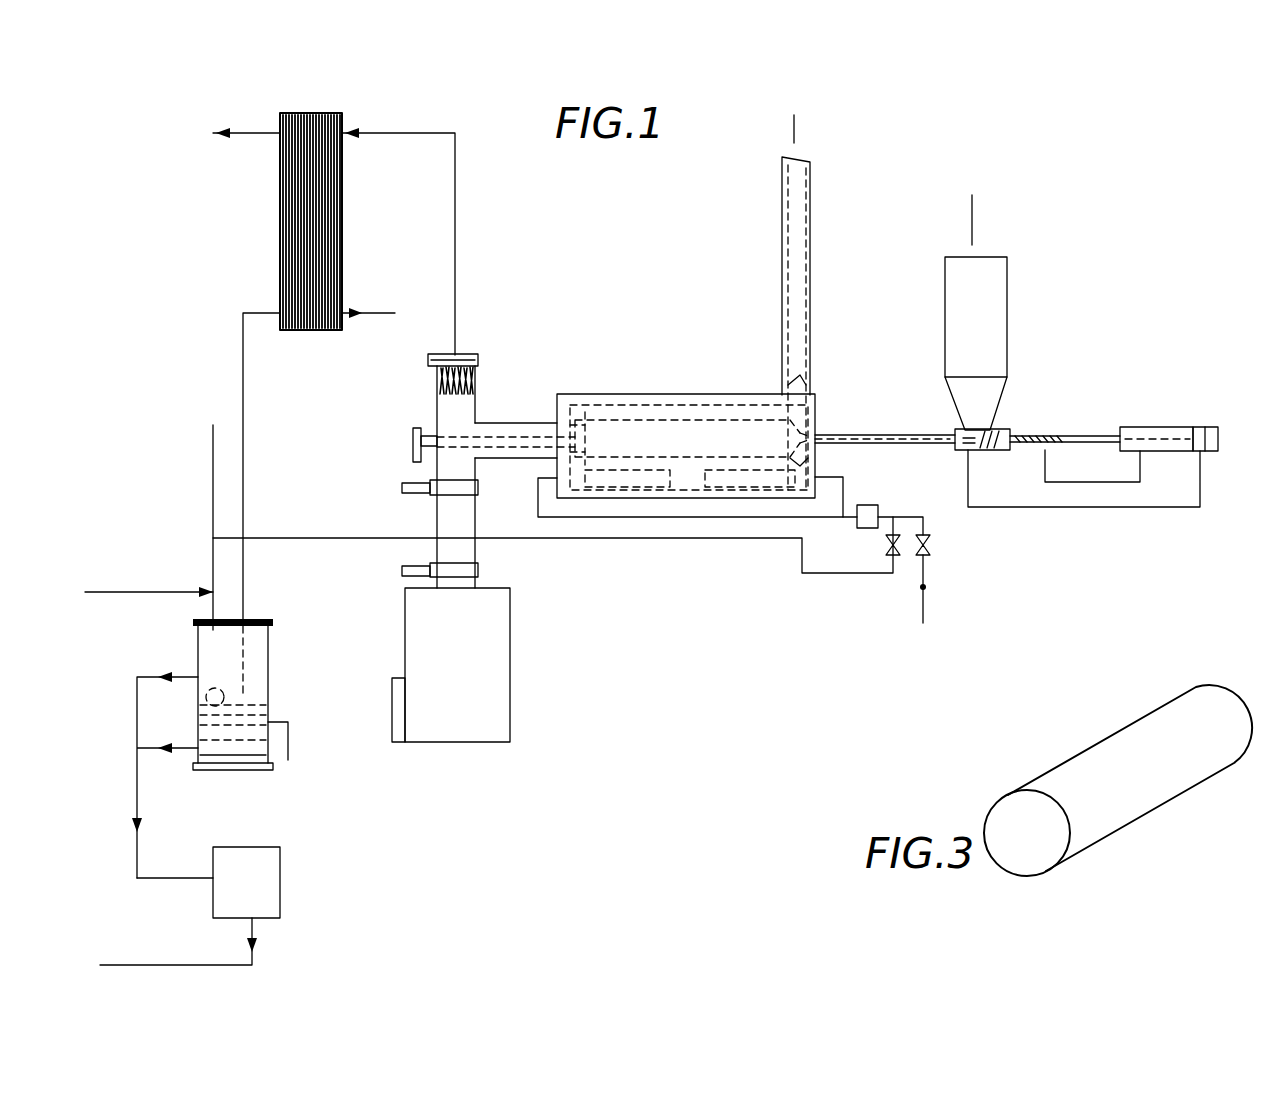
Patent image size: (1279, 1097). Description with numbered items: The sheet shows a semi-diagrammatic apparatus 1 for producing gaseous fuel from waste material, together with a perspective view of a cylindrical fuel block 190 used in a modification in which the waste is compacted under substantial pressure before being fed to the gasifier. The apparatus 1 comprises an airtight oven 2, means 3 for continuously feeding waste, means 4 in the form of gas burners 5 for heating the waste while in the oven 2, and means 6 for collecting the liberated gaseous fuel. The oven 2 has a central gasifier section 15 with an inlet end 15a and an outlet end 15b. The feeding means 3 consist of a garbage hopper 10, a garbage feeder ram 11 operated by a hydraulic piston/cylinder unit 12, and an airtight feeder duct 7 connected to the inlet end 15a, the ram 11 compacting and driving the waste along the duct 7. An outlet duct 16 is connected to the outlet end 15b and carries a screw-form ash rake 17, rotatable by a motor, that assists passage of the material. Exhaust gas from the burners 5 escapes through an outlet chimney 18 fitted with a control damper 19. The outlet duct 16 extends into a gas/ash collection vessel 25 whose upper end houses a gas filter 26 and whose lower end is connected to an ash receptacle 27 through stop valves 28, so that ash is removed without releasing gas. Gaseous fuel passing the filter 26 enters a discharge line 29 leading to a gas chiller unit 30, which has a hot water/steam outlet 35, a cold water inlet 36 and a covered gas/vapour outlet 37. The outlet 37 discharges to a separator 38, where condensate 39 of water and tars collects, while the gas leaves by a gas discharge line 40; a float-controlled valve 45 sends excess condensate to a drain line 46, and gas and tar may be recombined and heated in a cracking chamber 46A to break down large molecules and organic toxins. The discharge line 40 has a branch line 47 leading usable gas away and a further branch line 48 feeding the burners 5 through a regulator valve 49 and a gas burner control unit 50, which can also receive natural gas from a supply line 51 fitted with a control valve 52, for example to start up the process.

In FIG. 1, the apparatus 1 is at (1042, 288).
In FIG. 1, the oven 2 is at (688, 385).
In FIG. 1, the means for continuously feeding gas-producing waste material 3 is at (922, 435).
In FIG. 1, the means for heating the waste material 4 is at (615, 522).
In FIG. 1, the gas burners 5 is at (717, 482).
In FIG. 1, the means for collecting gaseous fuel 6 is at (430, 395).
In FIG. 1, the airtight feeder duct 7 is at (922, 447).
In FIG. 1, the garbage hopper 10 is at (1003, 367).
In FIG. 1, the garbage feeder ram 11 is at (1053, 430).
In FIG. 1, the hydraulic piston/cylinder unit 12 is at (1205, 427).
In FIG. 1, the central gasifier section 15 is at (615, 405).
In FIG. 1, the inlet end 15a is at (820, 400).
In FIG. 1, the outlet end 15b is at (597, 420).
In FIG. 1, the outlet duct 16 is at (540, 388).
In FIG. 1, the ash rake 17 is at (413, 441).
In FIG. 1, the outlet chimney 18 is at (782, 202).
In FIG. 1, the control damper 19 is at (805, 375).
In FIG. 1, the gas/ash collection vessel 25 is at (445, 511).
In FIG. 1, the gas filter 26 is at (437, 375).
In FIG. 1, the ash receptacle 27 is at (500, 660).
In FIG. 1, the stop valves 28 is at (415, 487).
In FIG. 1, the discharge line 29 is at (455, 178).
In FIG. 1, the gas chiller unit 30 is at (352, 206).
In FIG. 1, the hot water/steam outlet 35 is at (243, 133).
In FIG. 1, the cold water inlet 36 is at (395, 313).
In FIG. 1, the covered gas/vapour outlet 37 is at (243, 352).
In FIG. 1, the separator 38 is at (278, 668).
In FIG. 1, the condensate 39 is at (236, 755).
In FIG. 1, the gas discharge line 40 is at (213, 577).
In FIG. 1, the float-controlled valve 45 is at (200, 722).
In FIG. 1, the drain line 46 is at (288, 735).
In FIG. 1, the cracking chamber 46A is at (280, 885).
In FIG. 1, the branch line 47 is at (213, 478).
In FIG. 1, the further branch line 48 is at (523, 538).
In FIG. 1, the regulator valve 49 is at (888, 540).
In FIG. 1, the gas burner control unit 50 is at (868, 510).
In FIG. 1, the supply line 51 is at (928, 615).
In FIG. 1, the control valve 52 is at (930, 552).
In FIG. 3, the fuel block 190 is at (1043, 768).